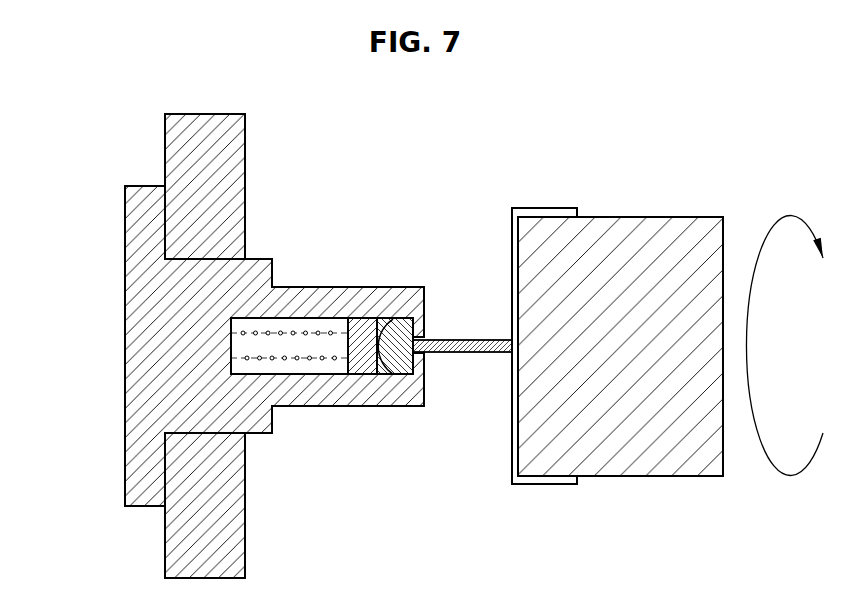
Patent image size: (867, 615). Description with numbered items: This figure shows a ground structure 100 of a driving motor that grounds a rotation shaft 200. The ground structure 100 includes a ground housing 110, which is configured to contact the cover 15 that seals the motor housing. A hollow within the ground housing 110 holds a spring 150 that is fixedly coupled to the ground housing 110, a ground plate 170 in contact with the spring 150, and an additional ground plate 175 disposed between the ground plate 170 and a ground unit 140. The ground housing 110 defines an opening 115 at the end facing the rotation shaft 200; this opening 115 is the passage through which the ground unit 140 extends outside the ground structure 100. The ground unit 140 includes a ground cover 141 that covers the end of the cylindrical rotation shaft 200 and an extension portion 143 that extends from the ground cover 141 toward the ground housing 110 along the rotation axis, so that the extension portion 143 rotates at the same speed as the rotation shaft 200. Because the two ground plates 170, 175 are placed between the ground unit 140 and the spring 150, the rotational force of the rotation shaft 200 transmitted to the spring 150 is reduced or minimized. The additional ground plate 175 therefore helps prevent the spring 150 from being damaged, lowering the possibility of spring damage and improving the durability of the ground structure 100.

The ground structure 100 is at (292, 329).
The ground housing 110 is at (223, 346).
The cover 15 is at (225, 194).
The opening 115 is at (430, 338).
The ground unit 140 is at (495, 282).
The ground cover 141 is at (547, 210).
The extension portion 143 is at (468, 345).
The spring 150 is at (271, 360).
The ground plate 170 is at (361, 368).
The additional ground plate 175 is at (405, 368).
The rotation shaft 200 is at (593, 232).